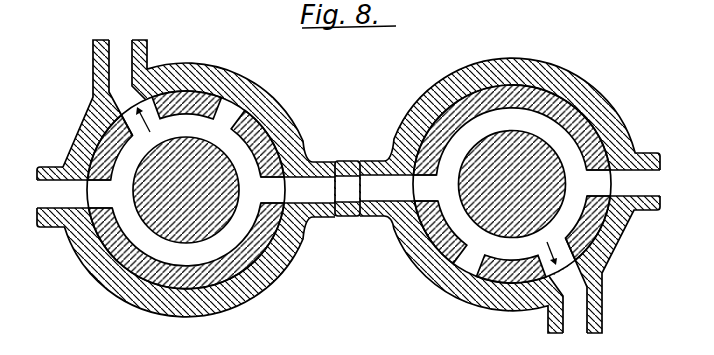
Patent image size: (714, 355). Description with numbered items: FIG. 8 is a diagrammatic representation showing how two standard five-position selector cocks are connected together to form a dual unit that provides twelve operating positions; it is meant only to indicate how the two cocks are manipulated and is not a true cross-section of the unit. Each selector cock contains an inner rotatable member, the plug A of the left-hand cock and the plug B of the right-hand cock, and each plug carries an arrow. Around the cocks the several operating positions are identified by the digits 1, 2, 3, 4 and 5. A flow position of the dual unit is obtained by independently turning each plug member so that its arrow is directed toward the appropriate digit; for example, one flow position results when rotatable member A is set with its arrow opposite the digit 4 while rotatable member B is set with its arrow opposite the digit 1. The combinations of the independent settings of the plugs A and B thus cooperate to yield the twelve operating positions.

The position-identifying digit 1 is at (124, 87).
The position-identifying digit 2 is at (246, 81).
The position-identifying digit 3 is at (349, 188).
The position-identifying digit 4 is at (248, 300).
The position-identifying digit 5 is at (348, 189).
The inner rotatable member A is at (263, 139).
The inner rotatable member B is at (580, 117).